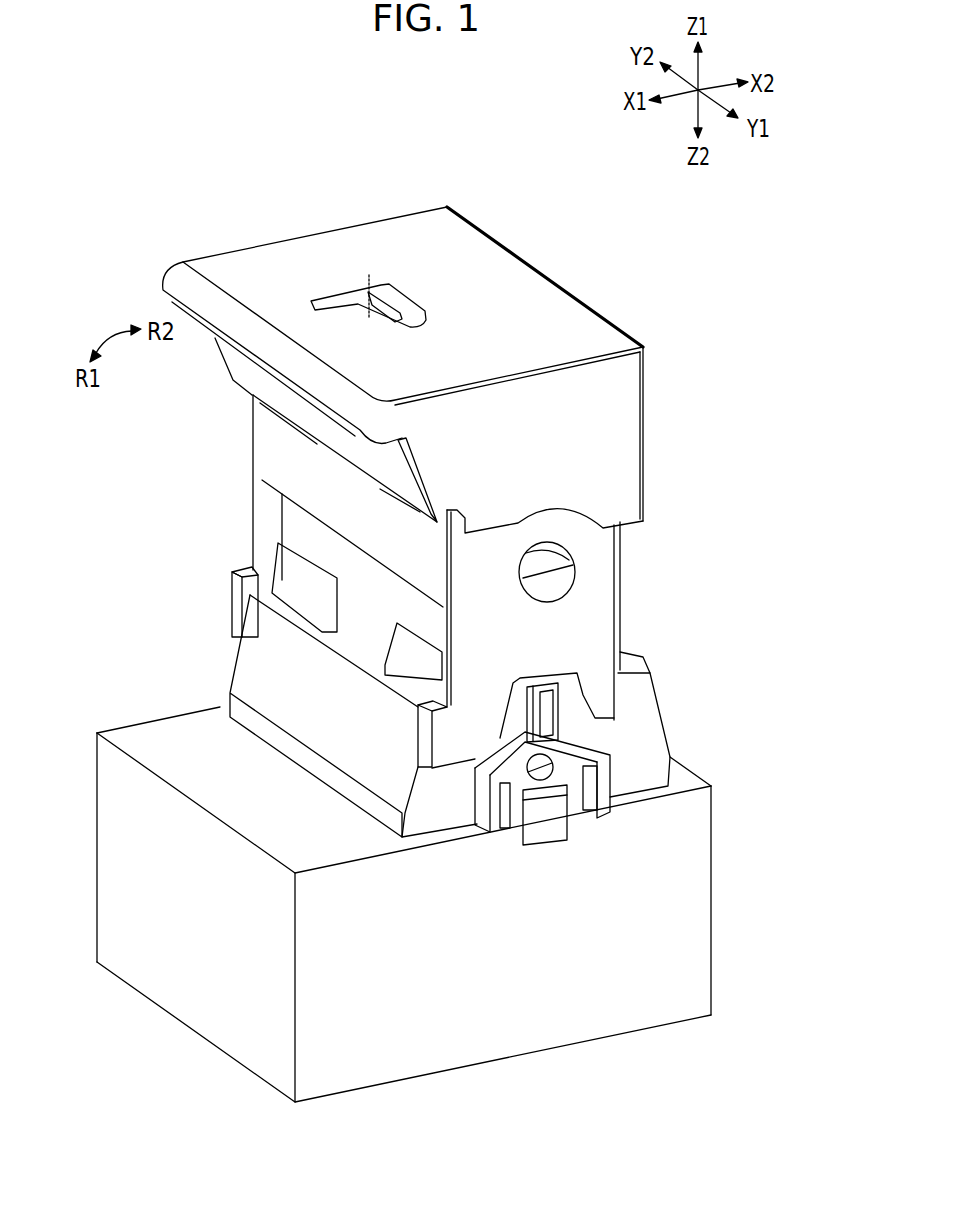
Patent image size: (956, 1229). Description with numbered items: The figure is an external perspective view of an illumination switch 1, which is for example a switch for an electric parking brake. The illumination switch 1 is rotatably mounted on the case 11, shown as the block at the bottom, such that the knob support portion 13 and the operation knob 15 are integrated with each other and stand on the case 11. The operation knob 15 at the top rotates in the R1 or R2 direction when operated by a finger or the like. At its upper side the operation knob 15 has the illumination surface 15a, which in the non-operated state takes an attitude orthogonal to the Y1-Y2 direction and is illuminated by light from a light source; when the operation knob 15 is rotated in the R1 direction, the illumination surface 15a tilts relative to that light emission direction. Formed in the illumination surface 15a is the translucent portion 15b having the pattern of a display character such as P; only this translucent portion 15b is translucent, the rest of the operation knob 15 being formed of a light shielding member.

The illumination switch 1 is at (341, 165).
The case 11 is at (262, 671).
The knob support portion 13 is at (584, 638).
The operation knob 15 is at (624, 441).
The illumination surface 15a is at (555, 311).
The translucent portion 15b is at (407, 303).